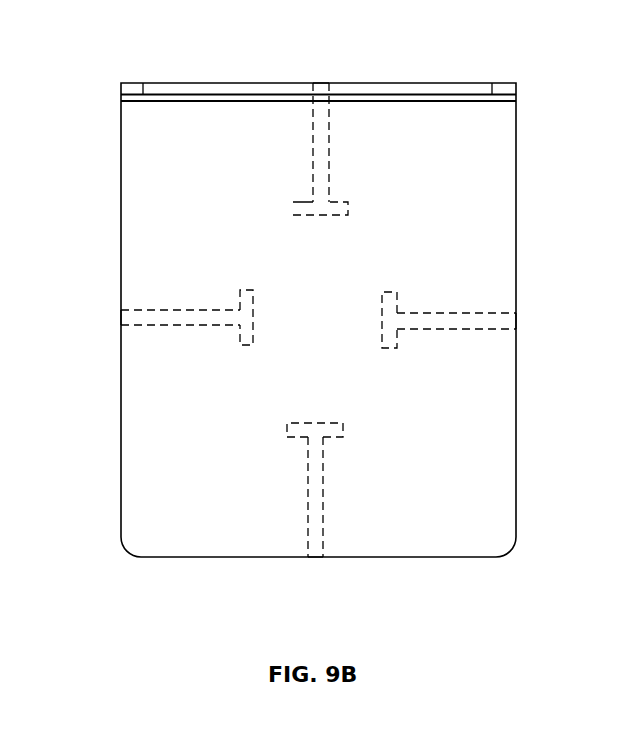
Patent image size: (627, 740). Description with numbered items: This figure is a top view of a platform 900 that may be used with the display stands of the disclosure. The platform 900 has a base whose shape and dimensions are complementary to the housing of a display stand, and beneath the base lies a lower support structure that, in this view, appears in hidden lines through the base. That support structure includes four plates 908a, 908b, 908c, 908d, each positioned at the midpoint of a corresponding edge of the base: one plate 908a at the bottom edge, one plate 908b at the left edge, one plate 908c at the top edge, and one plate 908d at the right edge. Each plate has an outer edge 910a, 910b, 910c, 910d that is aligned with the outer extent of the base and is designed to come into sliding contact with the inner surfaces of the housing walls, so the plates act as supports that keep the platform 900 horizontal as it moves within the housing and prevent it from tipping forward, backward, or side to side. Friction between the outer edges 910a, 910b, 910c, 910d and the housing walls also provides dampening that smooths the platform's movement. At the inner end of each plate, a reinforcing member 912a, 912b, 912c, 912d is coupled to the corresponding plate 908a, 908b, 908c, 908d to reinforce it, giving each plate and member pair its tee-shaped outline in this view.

The platform 900 is at (500, 47).
The plate 908a is at (308, 495).
The plate 908b is at (172, 310).
The plate 908c is at (313, 142).
The plate 908d is at (470, 330).
The outer edge 910a is at (318, 557).
The outer edge 910b is at (121, 318).
The outer edge 910c is at (322, 83).
The outer edge 910d is at (516, 318).
The reinforcing member 912a is at (305, 423).
The reinforcing member 912b is at (253, 312).
The reinforcing member 912c is at (328, 215).
The reinforcing member 912d is at (382, 318).